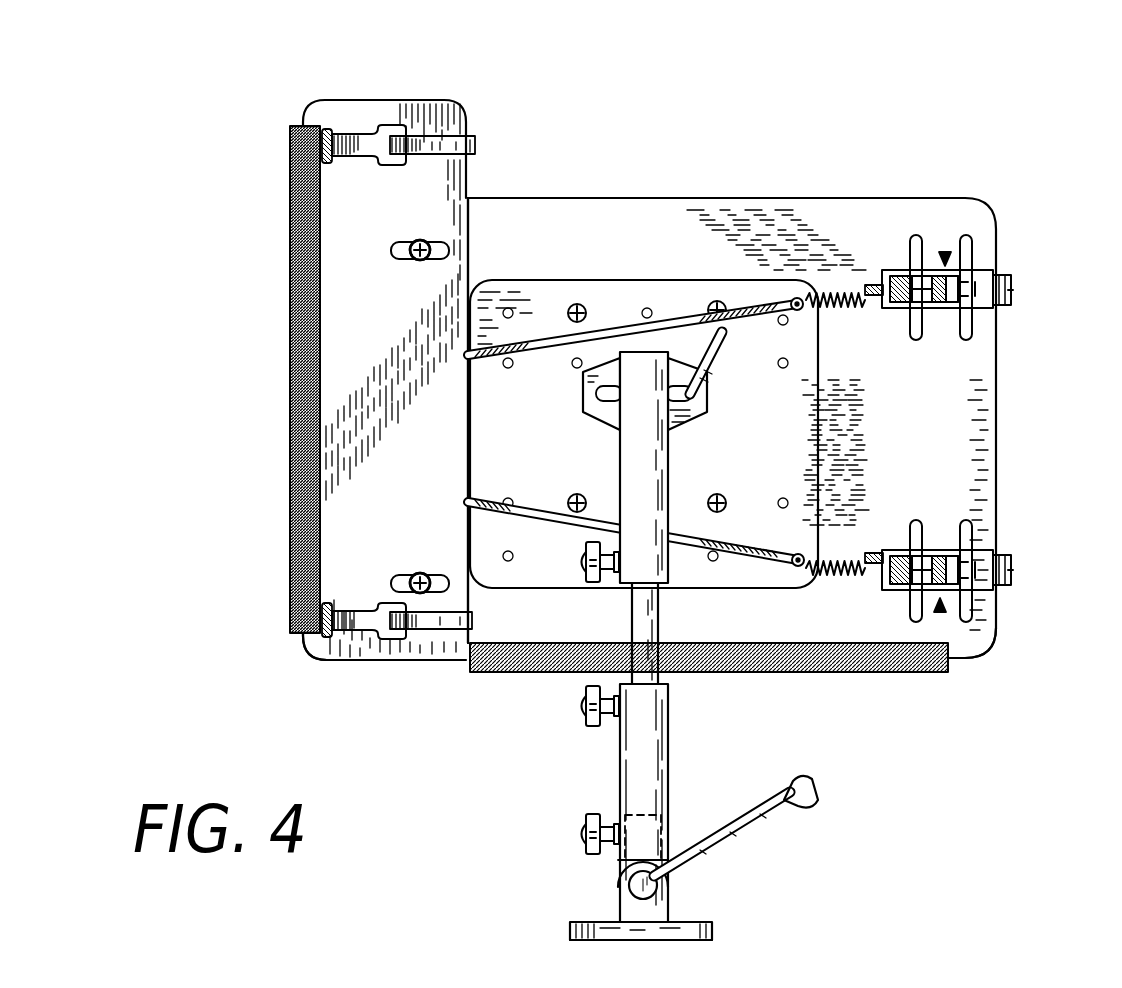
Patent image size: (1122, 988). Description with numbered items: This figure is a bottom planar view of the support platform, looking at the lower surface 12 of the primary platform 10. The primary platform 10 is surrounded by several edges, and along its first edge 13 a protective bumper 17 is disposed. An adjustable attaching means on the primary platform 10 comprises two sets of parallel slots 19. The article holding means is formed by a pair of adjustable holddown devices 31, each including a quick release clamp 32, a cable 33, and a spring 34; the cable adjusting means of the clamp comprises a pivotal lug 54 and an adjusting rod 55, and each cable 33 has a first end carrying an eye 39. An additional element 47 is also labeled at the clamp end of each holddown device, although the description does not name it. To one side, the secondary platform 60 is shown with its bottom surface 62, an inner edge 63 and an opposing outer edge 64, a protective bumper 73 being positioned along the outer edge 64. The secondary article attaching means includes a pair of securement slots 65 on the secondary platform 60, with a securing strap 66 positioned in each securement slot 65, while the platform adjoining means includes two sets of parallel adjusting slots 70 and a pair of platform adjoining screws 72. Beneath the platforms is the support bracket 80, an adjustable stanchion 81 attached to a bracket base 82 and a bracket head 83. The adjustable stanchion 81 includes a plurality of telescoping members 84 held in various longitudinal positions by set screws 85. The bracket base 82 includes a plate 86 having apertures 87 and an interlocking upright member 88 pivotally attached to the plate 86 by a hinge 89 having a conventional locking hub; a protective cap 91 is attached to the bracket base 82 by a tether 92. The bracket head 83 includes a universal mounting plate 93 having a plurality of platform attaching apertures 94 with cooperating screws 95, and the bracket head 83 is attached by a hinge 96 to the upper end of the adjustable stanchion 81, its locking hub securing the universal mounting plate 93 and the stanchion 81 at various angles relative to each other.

The primary platform 10 is at (815, 205).
The lower surface 12 is at (912, 451).
The first edge 13 is at (955, 660).
The protective bumper 17 is at (860, 672).
The parallel slots 19 is at (967, 342).
The adjustable holddown device 31 is at (946, 256).
The quick release clamp 32 is at (1005, 270).
The cable 33 is at (745, 300).
The spring 34 is at (832, 290).
The eye 39 is at (792, 298).
The lock nut 47 is at (1008, 286).
The pivotal lug 54 is at (915, 268).
The adjusting rod 55 is at (875, 284).
The secondary platform 60 is at (370, 100).
The bottom surface 62 is at (376, 314).
The inner edge 63 is at (468, 270).
The outer edge 64 is at (305, 635).
The securement slot 65 is at (329, 128).
The securing strap 66 is at (398, 128).
The adjusting slots 70 is at (450, 252).
The platform adjoining screw 72 is at (428, 243).
The protective bumper 73 is at (292, 605).
The support bracket 80 is at (684, 775).
The adjustable stanchion 81 is at (625, 765).
The bracket base 82 is at (617, 868).
The bracket head 83 is at (708, 400).
The telescoping members 84 is at (670, 683).
The set screw 85 is at (594, 688).
The plate 86 is at (572, 925).
The apertures 87 is at (712, 930).
The interlocking upright member 88 is at (668, 838).
The hinge 89 is at (627, 886).
The protective cap 91 is at (808, 790).
The tether 92 is at (757, 830).
The universal mounting plate 93 is at (752, 454).
The platform attaching apertures 94 is at (788, 362).
The screws 95 is at (713, 302).
The hinge 96 is at (694, 392).